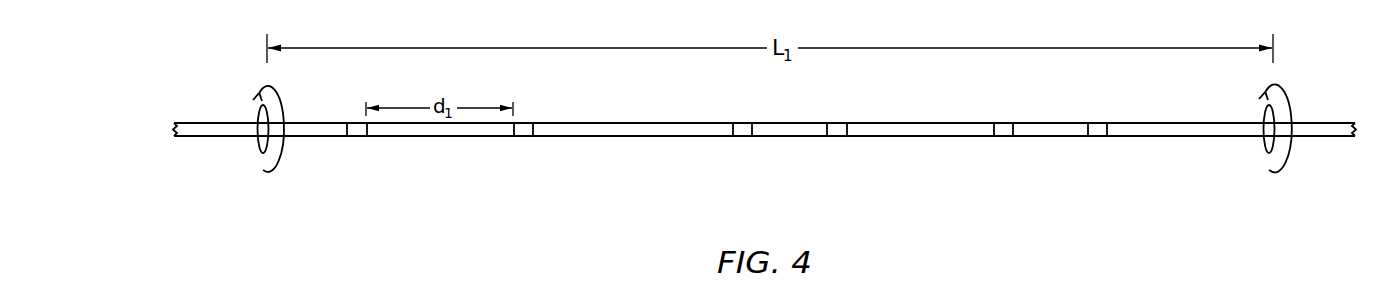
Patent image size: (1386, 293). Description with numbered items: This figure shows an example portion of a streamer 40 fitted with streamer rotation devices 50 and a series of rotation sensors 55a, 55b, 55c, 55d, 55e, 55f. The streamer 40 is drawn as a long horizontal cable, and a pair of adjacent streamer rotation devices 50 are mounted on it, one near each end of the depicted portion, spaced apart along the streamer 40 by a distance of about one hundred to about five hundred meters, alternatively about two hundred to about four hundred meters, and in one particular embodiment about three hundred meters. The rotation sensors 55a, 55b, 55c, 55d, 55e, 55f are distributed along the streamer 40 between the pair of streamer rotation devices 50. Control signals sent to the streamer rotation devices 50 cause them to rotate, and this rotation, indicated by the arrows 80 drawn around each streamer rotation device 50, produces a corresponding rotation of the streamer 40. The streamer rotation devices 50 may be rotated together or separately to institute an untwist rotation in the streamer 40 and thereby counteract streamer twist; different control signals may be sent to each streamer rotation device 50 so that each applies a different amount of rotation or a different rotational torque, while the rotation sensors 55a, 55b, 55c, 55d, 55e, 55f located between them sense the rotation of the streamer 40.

The streamer 40 is at (632, 155).
The streamer rotation device 50 is at (245, 150).
The arrows 80 is at (278, 158).
The rotation sensor 55a is at (352, 138).
The rotation sensor 55b is at (523, 138).
The rotation sensor 55c is at (748, 138).
The rotation sensor 55d is at (828, 138).
The rotation sensor 55e is at (1005, 138).
The rotation sensor 55f is at (1093, 138).